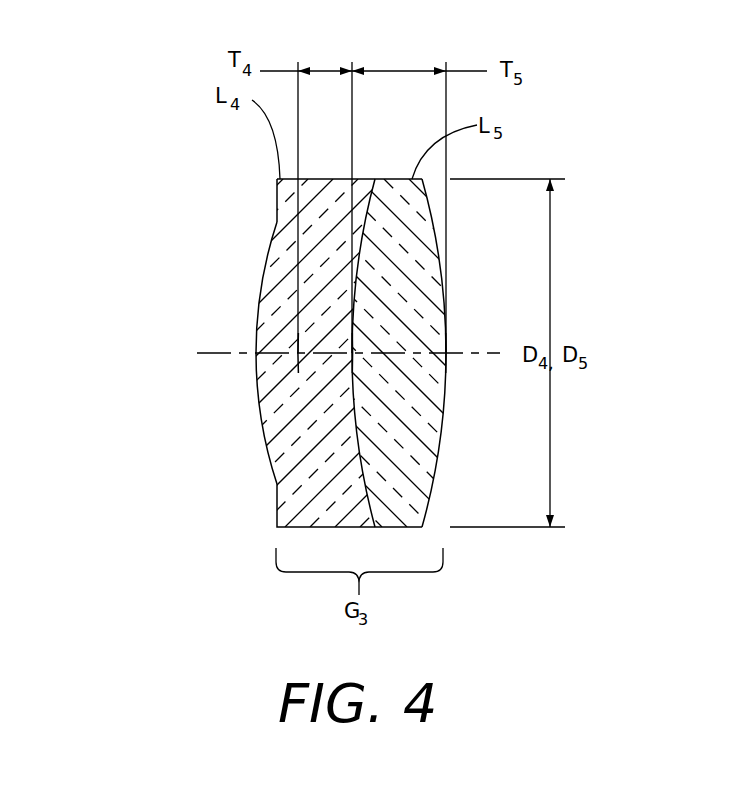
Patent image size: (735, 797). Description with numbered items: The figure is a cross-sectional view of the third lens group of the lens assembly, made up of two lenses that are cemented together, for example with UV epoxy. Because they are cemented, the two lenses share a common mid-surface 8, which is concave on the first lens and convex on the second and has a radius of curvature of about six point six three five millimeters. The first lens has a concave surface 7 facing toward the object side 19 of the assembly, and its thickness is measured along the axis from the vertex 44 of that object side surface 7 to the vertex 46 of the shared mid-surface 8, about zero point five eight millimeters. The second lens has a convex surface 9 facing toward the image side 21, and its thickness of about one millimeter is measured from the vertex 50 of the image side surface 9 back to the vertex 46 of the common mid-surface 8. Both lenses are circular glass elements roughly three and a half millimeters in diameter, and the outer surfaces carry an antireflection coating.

The concave surface 7 is at (293, 286).
The common mid-surface 8 is at (372, 509).
The convex surface 9 is at (445, 403).
The object side 19 is at (160, 199).
The image side 21 is at (651, 199).
The vertex of the object side surface 44 is at (298, 342).
The vertex of the shared mid-surface 46 is at (352, 355).
The vertex of the image side surface 50 is at (445, 345).